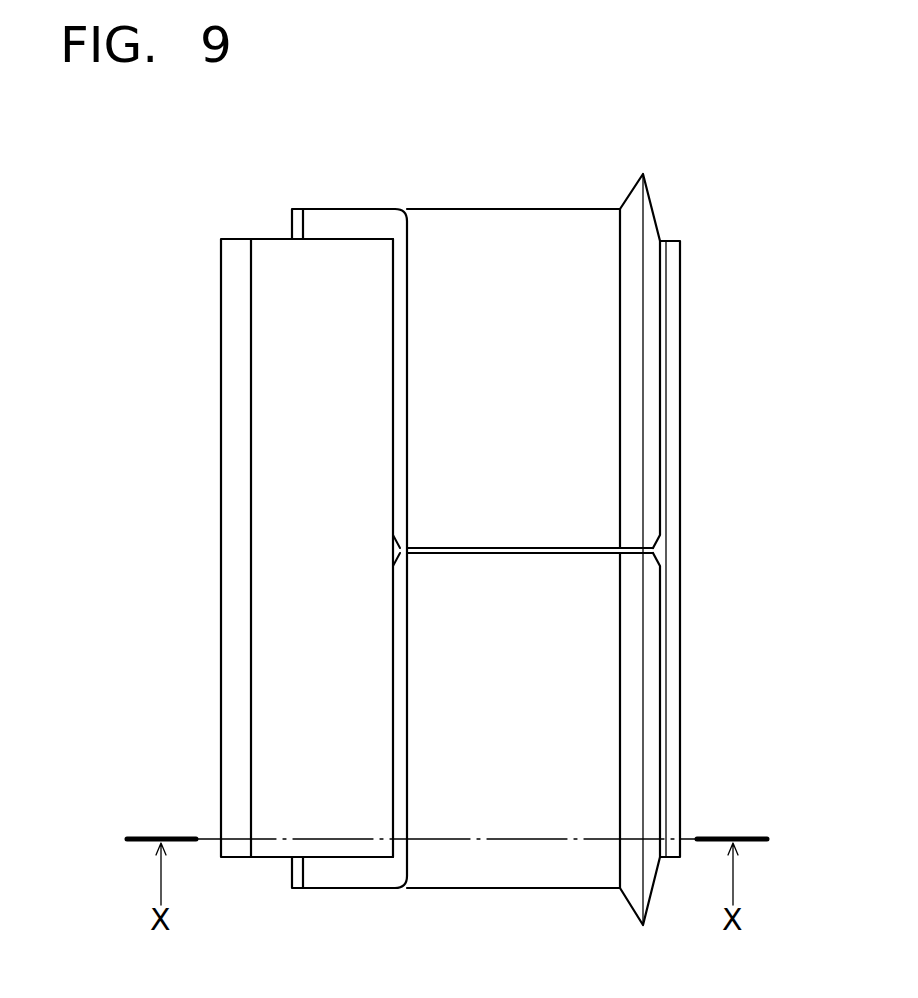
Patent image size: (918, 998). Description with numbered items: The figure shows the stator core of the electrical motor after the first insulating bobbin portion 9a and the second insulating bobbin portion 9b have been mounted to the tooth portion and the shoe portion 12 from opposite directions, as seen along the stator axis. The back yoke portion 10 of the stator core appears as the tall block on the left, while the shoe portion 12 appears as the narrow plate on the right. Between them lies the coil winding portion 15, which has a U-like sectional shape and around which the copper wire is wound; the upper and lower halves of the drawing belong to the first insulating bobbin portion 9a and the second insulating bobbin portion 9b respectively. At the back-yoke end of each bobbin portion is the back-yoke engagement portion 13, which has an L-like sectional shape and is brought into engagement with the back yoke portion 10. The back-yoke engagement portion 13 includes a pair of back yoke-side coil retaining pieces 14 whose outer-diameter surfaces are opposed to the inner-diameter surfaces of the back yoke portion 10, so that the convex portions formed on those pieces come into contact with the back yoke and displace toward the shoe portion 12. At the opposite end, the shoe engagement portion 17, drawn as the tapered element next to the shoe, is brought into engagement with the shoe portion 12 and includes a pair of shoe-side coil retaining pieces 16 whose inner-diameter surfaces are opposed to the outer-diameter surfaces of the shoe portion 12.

The back yoke portion 10 is at (305, 484).
The shoe portion 12 is at (680, 330).
The back-yoke engagement portion 13 is at (340, 224).
The back yoke-side coil retaining pieces 14 is at (400, 350).
The coil winding portion 15 is at (517, 365).
The shoe-side coil retaining pieces 16 is at (653, 400).
The shoe engagement portion 17 is at (650, 233).
The first insulating bobbin portion 9a is at (580, 240).
The second insulating bobbin portion 9b is at (520, 870).